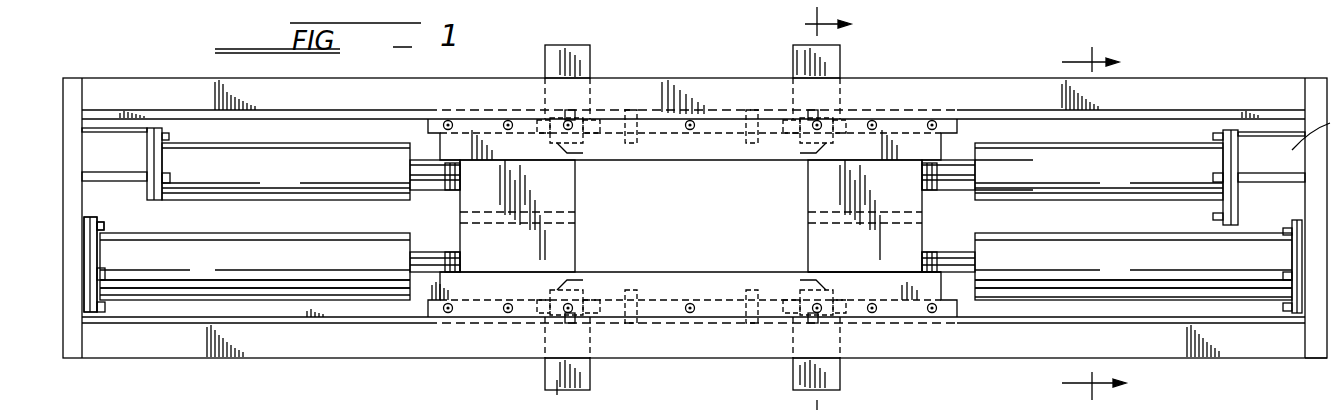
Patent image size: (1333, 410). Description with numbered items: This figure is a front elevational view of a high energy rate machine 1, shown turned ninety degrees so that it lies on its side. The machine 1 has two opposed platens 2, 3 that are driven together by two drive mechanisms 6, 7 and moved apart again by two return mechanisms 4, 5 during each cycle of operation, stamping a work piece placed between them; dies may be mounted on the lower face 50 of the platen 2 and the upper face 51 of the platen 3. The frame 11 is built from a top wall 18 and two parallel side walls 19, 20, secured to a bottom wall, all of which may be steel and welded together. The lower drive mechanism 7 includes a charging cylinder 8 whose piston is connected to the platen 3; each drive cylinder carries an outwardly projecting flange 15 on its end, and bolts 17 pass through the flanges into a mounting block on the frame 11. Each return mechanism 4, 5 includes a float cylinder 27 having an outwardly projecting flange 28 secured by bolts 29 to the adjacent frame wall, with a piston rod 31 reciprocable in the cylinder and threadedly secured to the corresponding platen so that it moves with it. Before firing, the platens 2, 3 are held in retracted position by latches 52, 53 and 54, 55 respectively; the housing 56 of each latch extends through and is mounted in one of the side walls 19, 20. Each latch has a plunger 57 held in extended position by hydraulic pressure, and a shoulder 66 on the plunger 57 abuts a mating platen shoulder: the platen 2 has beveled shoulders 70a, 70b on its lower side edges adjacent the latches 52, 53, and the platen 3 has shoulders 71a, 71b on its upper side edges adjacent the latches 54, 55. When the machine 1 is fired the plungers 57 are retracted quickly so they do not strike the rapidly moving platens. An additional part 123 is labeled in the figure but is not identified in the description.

The high energy rate machine 1 is at (1262, 54).
The upper platen 2 is at (560, 188).
The lower platen 3 is at (808, 183).
The upper return mechanism 4 is at (190, 280).
The lower return mechanism 5 is at (1172, 278).
The upper drive mechanism 6 is at (188, 155).
The lower drive mechanism 7 is at (1160, 163).
The charging cylinder 8 is at (1032, 163).
The frame 11 is at (958, 78).
The flange 15 is at (1228, 133).
The bolts 17 is at (1217, 137).
The top wall 18 is at (83, 172).
The side wall 19 is at (457, 108).
The side wall 20 is at (465, 327).
The float cylinder 27 is at (268, 280).
The flange 28 is at (90, 288).
The bolts 29 is at (100, 268).
The piston rod 31 is at (428, 265).
The lower face of platen 50 is at (575, 250).
The upper face of platen 51 is at (808, 240).
The latch 52 is at (578, 65).
The latch 53 is at (583, 375).
The latch 54 is at (835, 57).
The latch 55 is at (830, 375).
The latch housing 56 is at (797, 57).
The plunger 57 is at (543, 127).
The plunger shoulder 66 is at (602, 123).
The beveled shoulder 70a is at (560, 150).
The beveled shoulder 70b is at (560, 280).
The shoulder 71a is at (833, 147).
The shoulder 71b is at (837, 287).
The support 123 is at (918, 409).